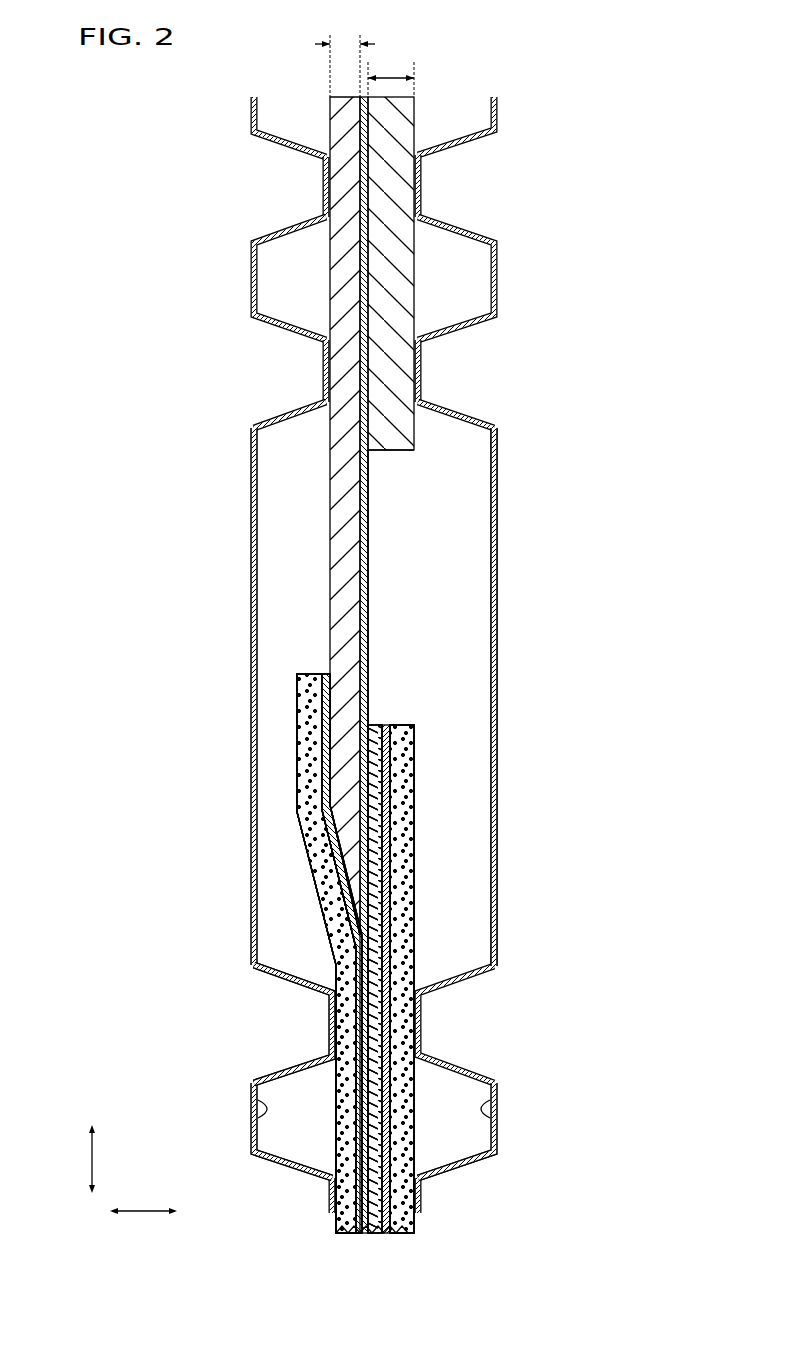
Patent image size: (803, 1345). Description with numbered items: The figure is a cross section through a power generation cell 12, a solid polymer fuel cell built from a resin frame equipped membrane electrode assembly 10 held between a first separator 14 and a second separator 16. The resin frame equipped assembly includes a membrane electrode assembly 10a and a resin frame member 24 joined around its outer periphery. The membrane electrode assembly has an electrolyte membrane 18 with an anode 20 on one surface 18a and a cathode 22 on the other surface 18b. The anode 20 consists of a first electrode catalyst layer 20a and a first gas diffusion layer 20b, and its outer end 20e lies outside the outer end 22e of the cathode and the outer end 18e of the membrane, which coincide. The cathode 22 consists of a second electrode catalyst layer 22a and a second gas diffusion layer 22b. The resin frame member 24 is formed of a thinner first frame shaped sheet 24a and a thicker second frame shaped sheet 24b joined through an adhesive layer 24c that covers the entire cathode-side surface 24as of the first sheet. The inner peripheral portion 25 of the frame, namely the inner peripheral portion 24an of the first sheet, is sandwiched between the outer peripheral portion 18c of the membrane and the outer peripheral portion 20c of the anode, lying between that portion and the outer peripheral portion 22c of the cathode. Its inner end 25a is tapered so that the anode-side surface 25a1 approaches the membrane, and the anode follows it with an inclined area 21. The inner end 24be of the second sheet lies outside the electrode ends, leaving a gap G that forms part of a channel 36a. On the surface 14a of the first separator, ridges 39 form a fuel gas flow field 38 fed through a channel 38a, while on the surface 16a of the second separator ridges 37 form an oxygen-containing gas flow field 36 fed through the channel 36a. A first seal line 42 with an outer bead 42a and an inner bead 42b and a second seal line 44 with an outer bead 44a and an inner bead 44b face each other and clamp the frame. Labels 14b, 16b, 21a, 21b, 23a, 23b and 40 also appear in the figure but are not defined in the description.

The power generation cell 12 is at (160, 92).
The resin frame equipped membrane electrode assembly 10 is at (362, 913).
The membrane electrode assembly 10a is at (323, 1098).
The first separator 14 is at (322, 642).
The surface of the first separator 14a is at (253, 1120).
The upper portion of first separator 14b is at (252, 456).
The second separator 16 is at (410, 642).
The surface of the second separator 16a is at (496, 1120).
The upper portion of second separator 16b is at (497, 460).
The electrolyte membrane 18 is at (371, 951).
The one surface of the electrolyte membrane 18a is at (350, 938).
The surface of the electrolyte membrane 18b is at (383, 932).
The outer peripheral portion of the electrolyte membrane 18c is at (373, 767).
The outer end of the electrolyte membrane 18e is at (373, 723).
The anode 20 is at (196, 1000).
The first electrode catalyst layer 20a is at (340, 1004).
The first gas diffusion layer 20b is at (370, 1029).
The outer peripheral portion of the anode 20c is at (310, 757).
The outer end of the anode 20e is at (303, 672).
The inclined area 21 is at (345, 884).
The upper end of anode catalyst layer 21a is at (325, 690).
The lower end of anode catalyst layer 21b is at (340, 1195).
The cathode 22 is at (551, 1012).
The second electrode catalyst layer 22a is at (422, 1027).
The second gas diffusion layer 22b is at (420, 1052).
The outer peripheral portion of the cathode 22c is at (403, 793).
The outer end of the cathode 22e is at (398, 725).
The cathode catalyst layer 23a is at (390, 860).
The cathode gas diffusion layer 23b is at (396, 1092).
The resin frame member 24 is at (342, 665).
The first frame shaped sheet 24a is at (342, 276).
The inner peripheral portion of the first frame shaped sheet 24an is at (345, 870).
The surface of the first frame shaped sheet 24as is at (364, 528).
The second frame shaped sheet 24b is at (405, 190).
The inner end of the second frame shaped sheet 24be is at (387, 452).
The adhesive layer 24c is at (369, 594).
The inner peripheral portion of the resin frame member 25 is at (340, 804).
The inner end of the resin frame member 25a is at (335, 860).
The surface of the inner end adjacent to the anode 25a1 is at (340, 861).
The oxygen-containing gas flow field 36 is at (456, 1130).
The channel 36a is at (468, 617).
The ridges 37 is at (392, 1043).
The fuel gas flow field 38 is at (293, 1130).
The channel 38a is at (278, 538).
The ridges 39 is at (337, 1003).
The coolant flow field 40 is at (288, 997).
The first seal line 42 is at (275, 129).
The outer bead 42a is at (333, 173).
The inner bead 42b is at (332, 364).
The second seal line 44 is at (468, 126).
The outer bead 44a is at (413, 193).
The inner bead 44b is at (413, 385).
The gap G is at (380, 565).